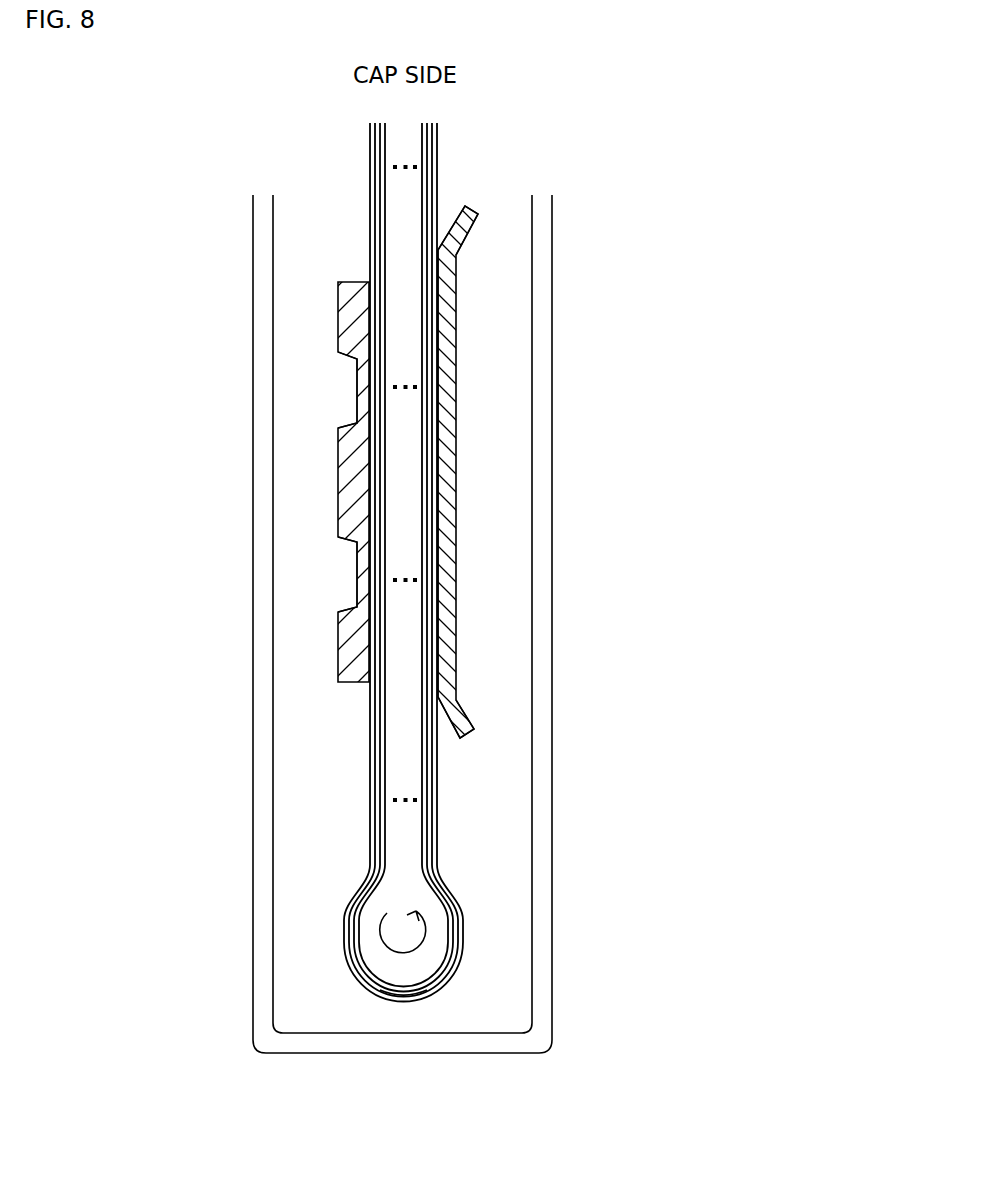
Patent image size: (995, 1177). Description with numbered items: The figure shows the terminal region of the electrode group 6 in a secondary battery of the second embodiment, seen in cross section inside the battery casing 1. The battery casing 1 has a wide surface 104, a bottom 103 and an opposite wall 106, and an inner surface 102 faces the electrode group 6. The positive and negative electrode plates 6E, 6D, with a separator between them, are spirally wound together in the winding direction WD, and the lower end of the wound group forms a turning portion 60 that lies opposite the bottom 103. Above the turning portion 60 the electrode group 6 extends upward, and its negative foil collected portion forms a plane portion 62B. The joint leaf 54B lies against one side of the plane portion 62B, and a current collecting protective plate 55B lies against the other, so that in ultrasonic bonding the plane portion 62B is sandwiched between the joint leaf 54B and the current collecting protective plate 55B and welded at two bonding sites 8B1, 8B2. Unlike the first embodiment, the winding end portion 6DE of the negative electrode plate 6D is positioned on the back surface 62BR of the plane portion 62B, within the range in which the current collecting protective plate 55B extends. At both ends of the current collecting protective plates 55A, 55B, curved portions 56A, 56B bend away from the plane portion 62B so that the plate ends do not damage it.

The battery casing 1 is at (409, 653).
The electrode group 6 is at (429, 610).
The negative electrode plate 6D is at (344, 917).
The positive electrode plate 6E is at (357, 948).
The winding end portion 6DE is at (438, 365).
The bonding site 8B1 is at (357, 382).
The bonding site 8B2 is at (356, 573).
The joint leaf 54B is at (271, 459).
The current collecting protective plate 55B is at (594, 461).
The current collecting protective plate 55A is at (458, 472).
The curved portion 56B is at (594, 461).
The curved portion 56A is at (464, 232).
The turning portion 60 is at (410, 1002).
The plane portion 62B is at (370, 715).
The back surface 62BR is at (437, 820).
The inner surface 102 is at (273, 796).
The bottom 103 is at (385, 1053).
The wide surface 104 is at (252, 455).
The case right wall 106 is at (552, 453).
The winding direction WD is at (427, 938).